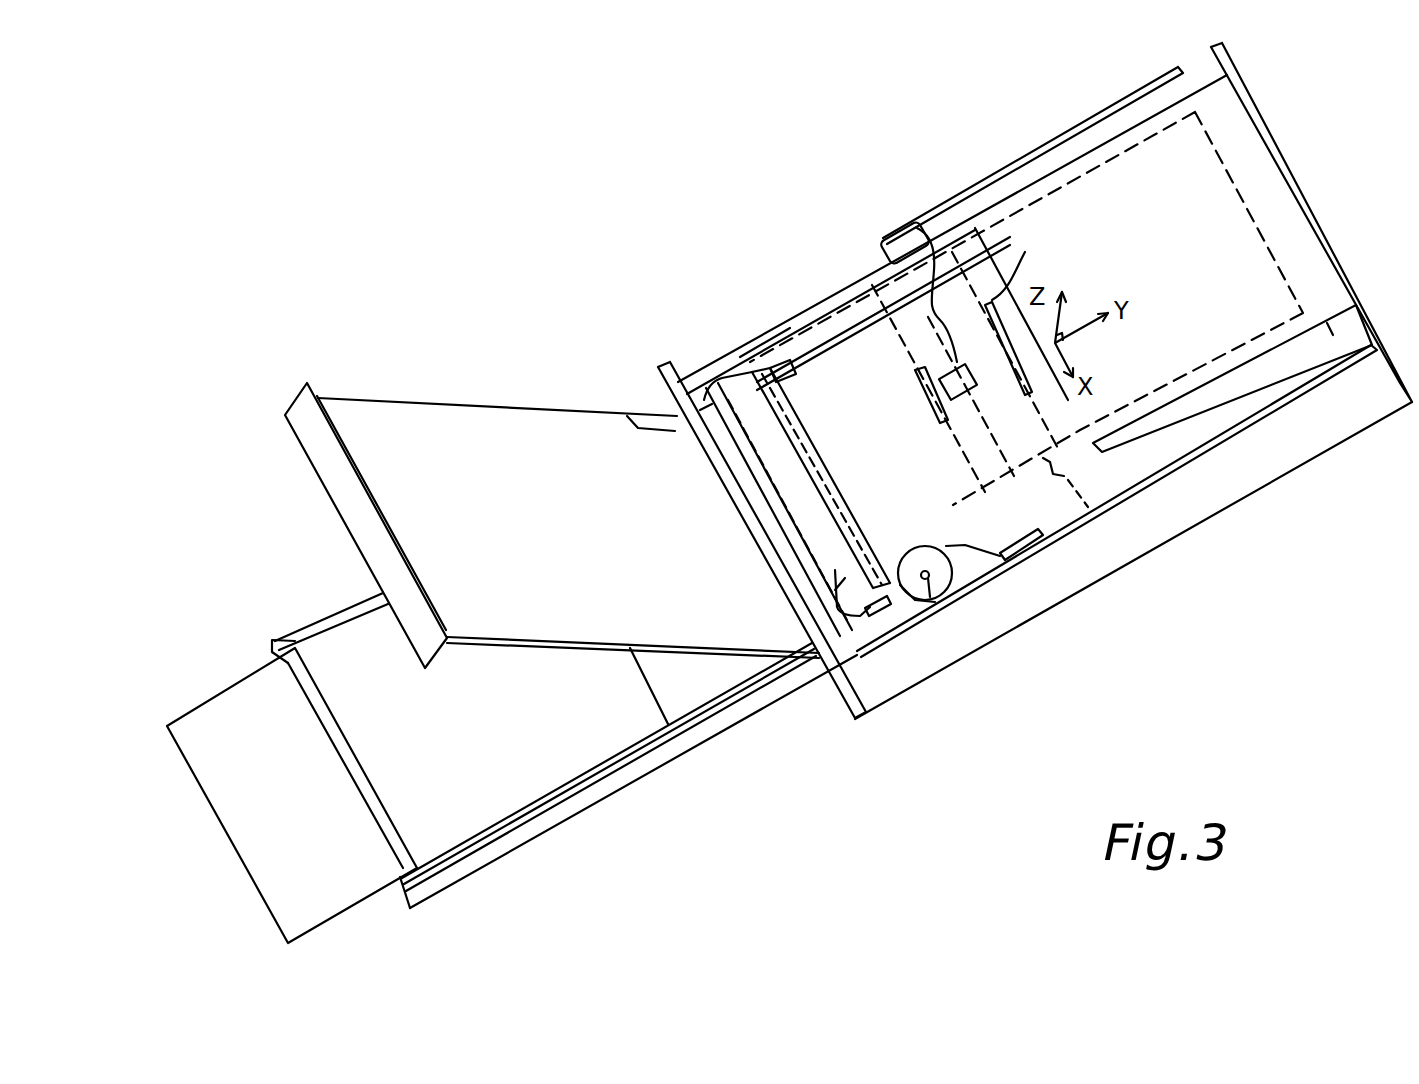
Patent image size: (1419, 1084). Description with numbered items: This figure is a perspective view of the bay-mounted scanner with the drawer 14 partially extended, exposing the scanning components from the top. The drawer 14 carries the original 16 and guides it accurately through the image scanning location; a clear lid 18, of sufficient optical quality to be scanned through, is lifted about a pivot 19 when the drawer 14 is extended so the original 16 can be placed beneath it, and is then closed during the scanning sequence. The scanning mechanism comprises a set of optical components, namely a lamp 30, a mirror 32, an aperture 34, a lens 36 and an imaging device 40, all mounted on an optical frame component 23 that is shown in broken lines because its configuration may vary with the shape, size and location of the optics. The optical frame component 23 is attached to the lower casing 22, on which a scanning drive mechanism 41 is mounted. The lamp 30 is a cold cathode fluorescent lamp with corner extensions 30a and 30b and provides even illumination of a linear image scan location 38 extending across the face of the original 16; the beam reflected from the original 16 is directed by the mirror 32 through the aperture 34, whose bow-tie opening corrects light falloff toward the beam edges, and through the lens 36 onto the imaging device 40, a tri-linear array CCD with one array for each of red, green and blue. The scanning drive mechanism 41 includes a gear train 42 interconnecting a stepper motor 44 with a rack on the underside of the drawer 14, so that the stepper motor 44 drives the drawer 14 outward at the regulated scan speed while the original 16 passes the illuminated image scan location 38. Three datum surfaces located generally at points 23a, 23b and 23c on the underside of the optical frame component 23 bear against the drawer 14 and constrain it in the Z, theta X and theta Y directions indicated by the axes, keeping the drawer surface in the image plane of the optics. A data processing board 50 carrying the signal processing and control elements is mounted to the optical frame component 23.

The drawer 14 is at (590, 808).
The original 16 is at (357, 904).
The clear lid 18 is at (402, 398).
The pivot 19 is at (818, 680).
The lower casing 22 is at (880, 713).
The optical frame component 23 is at (1090, 508).
The datum surface point 23a is at (708, 372).
The datum surface point 23b is at (762, 355).
The datum surface point 23c is at (812, 605).
The lamp 30 is at (740, 492).
The corner extension 30a is at (873, 617).
The corner extension 30b is at (710, 440).
The mirror 32 is at (770, 360).
The aperture 34 is at (913, 390).
The lens 36 is at (916, 230).
The linear image scan location 38 is at (810, 437).
The imaging device 40 is at (1015, 310).
The scanning drive mechanism 41 is at (975, 600).
The gear train 42 is at (1003, 562).
The stepper motor 44 is at (970, 648).
The data processing board 50 is at (1232, 377).